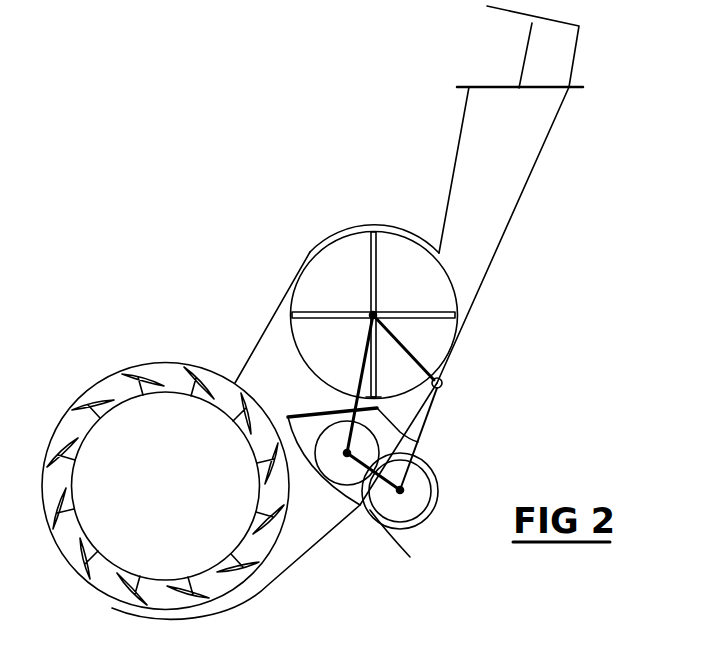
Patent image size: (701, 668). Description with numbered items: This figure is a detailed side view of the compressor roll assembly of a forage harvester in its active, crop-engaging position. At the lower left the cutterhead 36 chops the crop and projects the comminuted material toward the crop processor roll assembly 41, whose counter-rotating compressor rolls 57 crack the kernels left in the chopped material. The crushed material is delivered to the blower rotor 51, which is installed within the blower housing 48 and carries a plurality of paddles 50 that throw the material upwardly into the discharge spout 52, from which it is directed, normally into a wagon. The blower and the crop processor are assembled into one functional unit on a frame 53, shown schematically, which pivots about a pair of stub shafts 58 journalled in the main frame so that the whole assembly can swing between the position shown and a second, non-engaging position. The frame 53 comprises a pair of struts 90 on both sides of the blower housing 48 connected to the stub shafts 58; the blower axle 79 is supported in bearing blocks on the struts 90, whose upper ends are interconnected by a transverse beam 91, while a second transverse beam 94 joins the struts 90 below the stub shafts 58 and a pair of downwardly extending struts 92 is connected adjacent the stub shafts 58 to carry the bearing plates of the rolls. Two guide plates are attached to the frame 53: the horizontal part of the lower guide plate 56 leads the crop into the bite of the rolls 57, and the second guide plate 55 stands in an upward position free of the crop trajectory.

The cutterhead 36 is at (127, 413).
The crop processor roll assembly 41 is at (357, 530).
The blower housing 48 is at (350, 227).
The paddles 50 is at (377, 240).
The blower rotor 51 is at (442, 328).
The discharge spout 52 is at (540, 128).
The frame 53 is at (345, 353).
The second guide plate 55 is at (305, 413).
The lower guide plate 56 is at (433, 512).
The compressor rolls 57 is at (408, 512).
The stub shafts 58 is at (452, 395).
The blower axle 79 is at (371, 306).
The struts 90 is at (448, 350).
The transverse beam 91 is at (292, 330).
The downwardly extending struts 92 is at (420, 445).
The second transverse beam 94 is at (338, 473).